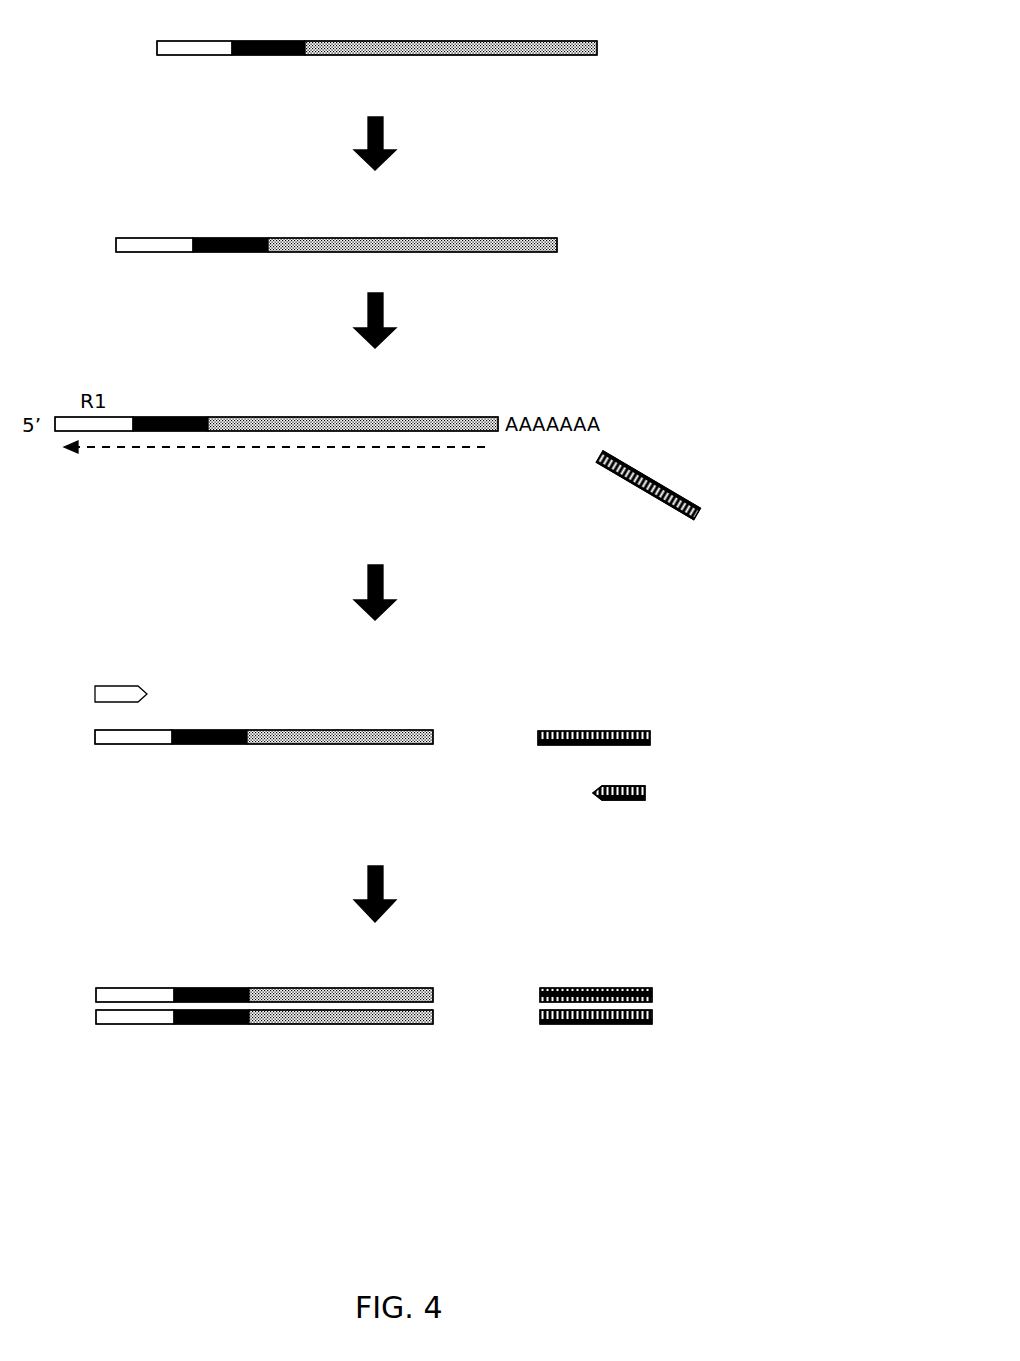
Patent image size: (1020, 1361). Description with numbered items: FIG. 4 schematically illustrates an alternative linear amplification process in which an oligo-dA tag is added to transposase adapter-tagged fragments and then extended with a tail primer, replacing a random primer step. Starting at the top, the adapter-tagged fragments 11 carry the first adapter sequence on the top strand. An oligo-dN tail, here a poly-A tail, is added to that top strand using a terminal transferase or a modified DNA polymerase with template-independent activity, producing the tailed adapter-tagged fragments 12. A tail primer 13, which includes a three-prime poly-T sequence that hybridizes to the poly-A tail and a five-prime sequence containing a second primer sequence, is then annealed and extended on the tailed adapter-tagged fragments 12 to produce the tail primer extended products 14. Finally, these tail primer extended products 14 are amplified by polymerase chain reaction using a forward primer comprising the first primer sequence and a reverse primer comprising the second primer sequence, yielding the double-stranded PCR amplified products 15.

The adapter-tagged fragments 11 is at (622, 40).
The tailed adapter-tagged fragments 12 is at (676, 240).
The tail primer 13 is at (595, 492).
The tail primer extended products 14 is at (698, 733).
The PCR amplified products 15 is at (700, 966).